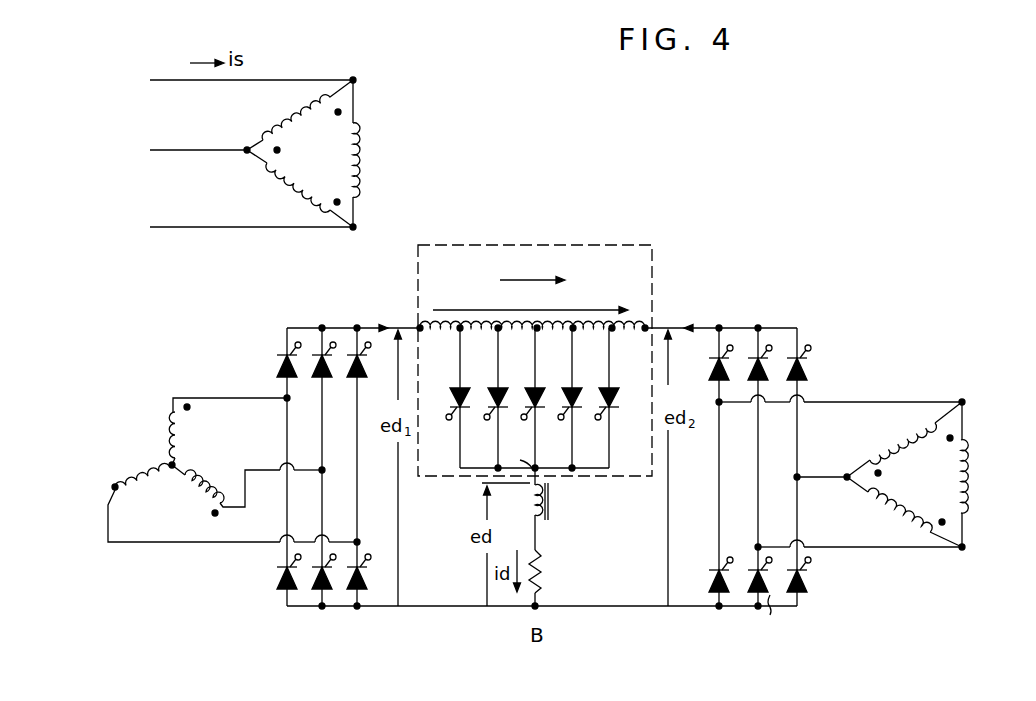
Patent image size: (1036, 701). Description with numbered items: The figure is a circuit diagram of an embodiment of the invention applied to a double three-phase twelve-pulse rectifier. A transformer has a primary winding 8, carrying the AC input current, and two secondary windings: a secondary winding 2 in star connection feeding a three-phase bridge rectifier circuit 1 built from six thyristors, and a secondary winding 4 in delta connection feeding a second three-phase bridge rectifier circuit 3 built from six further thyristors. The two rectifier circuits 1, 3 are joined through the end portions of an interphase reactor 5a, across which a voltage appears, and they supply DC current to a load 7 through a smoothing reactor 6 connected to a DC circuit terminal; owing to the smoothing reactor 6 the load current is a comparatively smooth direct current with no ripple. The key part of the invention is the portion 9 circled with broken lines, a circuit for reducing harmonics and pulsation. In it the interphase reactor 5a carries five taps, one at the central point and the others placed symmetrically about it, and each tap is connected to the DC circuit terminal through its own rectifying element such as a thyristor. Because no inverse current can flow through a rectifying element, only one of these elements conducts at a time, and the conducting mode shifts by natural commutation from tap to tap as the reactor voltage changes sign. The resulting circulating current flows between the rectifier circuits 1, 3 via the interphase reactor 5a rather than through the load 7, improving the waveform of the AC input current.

The three-phase bridge rectifier circuit 1 is at (335, 317).
The secondary winding in star connection 2 is at (155, 450).
The three-phase bridge rectifier circuit 3 is at (776, 327).
The secondary winding in delta connection 4 is at (973, 472).
The interphase reactor 5a is at (578, 323).
The smoothing reactor 6 is at (552, 503).
The load 7 is at (547, 560).
The primary winding of the transformer 8 is at (363, 140).
The circuit for reducing harmonics and pulsation 9 is at (534, 337).